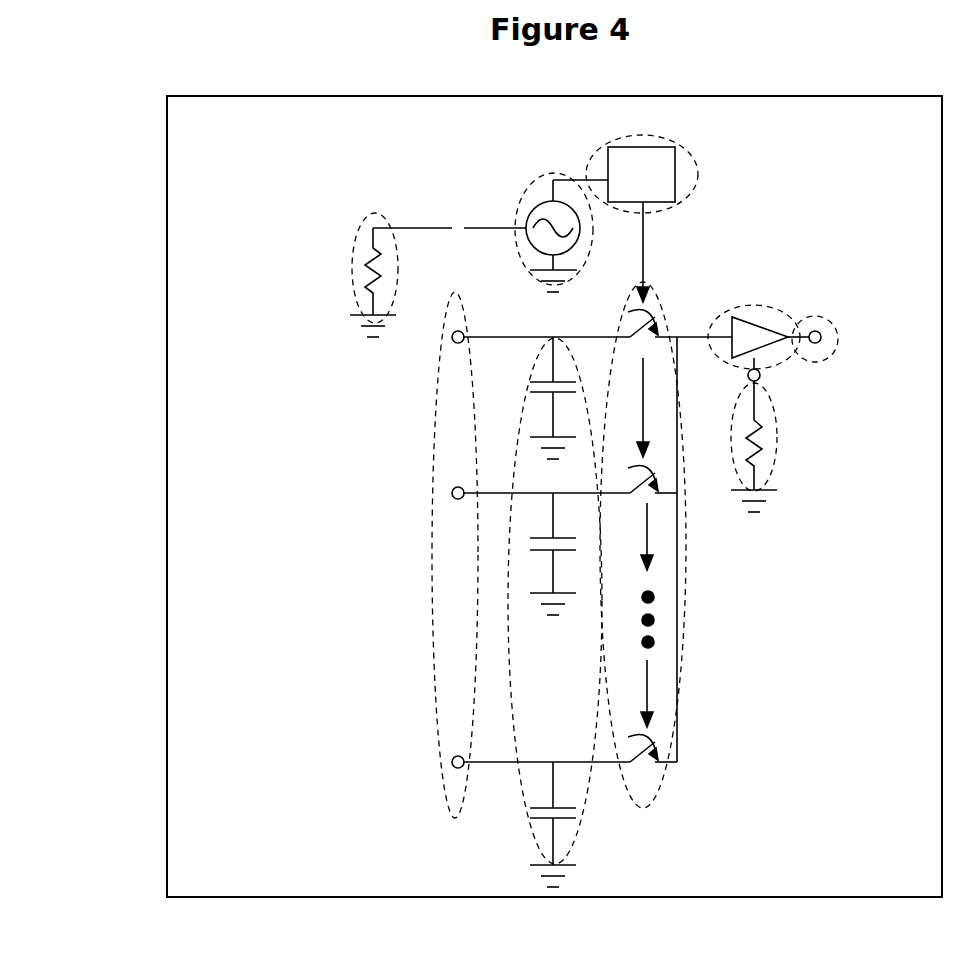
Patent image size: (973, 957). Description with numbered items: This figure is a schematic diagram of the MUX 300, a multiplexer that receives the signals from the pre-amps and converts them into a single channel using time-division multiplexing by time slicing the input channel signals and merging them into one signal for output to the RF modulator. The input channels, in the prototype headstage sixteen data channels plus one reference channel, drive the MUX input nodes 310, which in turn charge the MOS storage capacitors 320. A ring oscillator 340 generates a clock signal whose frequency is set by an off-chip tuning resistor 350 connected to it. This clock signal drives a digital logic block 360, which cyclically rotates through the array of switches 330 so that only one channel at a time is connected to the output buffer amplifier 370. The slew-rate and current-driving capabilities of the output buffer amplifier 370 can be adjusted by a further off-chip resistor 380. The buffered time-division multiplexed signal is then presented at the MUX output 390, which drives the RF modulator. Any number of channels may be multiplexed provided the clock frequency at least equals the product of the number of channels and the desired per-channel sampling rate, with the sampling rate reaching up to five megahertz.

The MUX 300 is at (205, 128).
The MUX input nodes 310 is at (432, 593).
The MOS storage capacitors 320 is at (510, 730).
The array of switches 330 is at (687, 572).
The ring oscillator 340 is at (522, 190).
The off-chip tuning resistor 350 is at (355, 290).
The digital logic block 360 is at (680, 202).
The output buffer amplifier 370 is at (742, 305).
The off-chip resistor 380 is at (775, 437).
The MUX output 390 is at (835, 322).